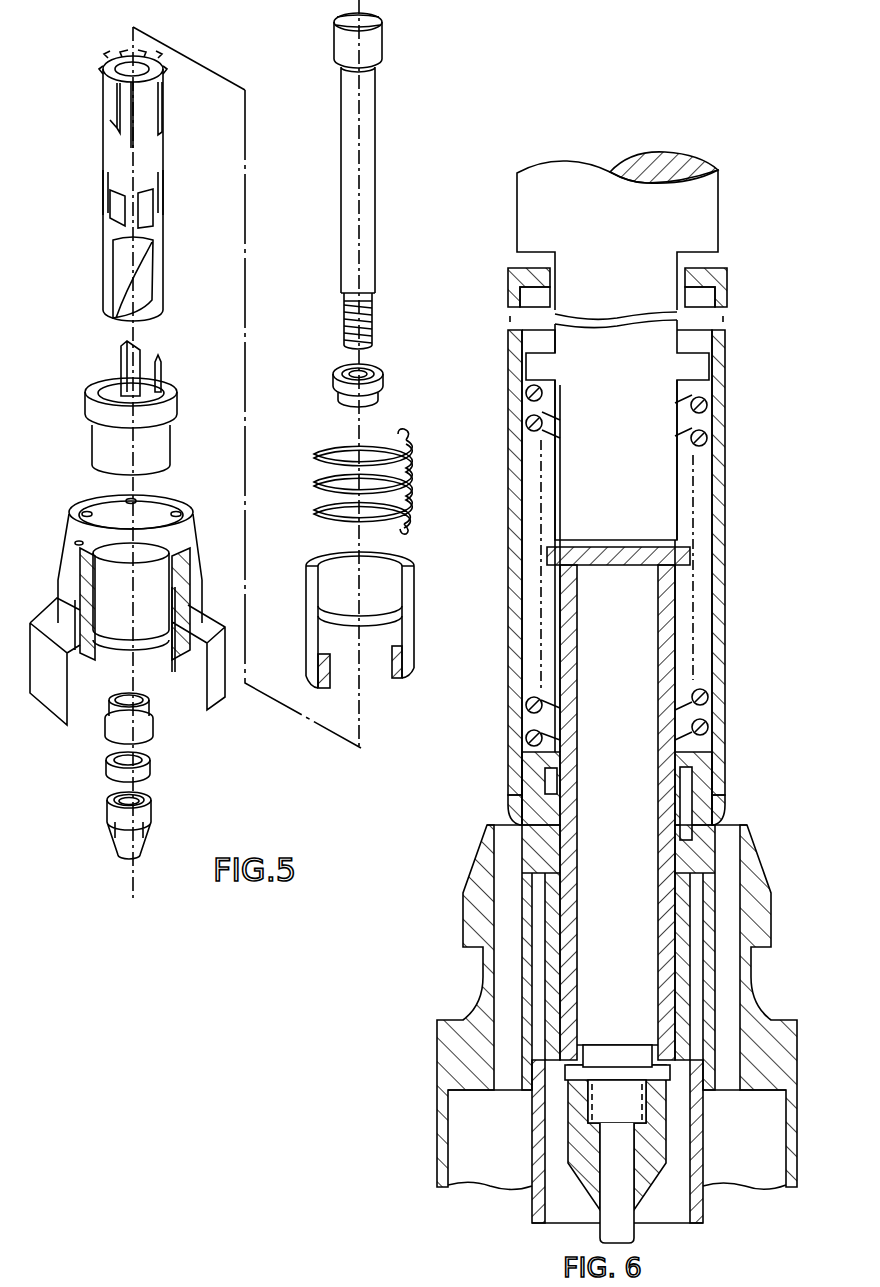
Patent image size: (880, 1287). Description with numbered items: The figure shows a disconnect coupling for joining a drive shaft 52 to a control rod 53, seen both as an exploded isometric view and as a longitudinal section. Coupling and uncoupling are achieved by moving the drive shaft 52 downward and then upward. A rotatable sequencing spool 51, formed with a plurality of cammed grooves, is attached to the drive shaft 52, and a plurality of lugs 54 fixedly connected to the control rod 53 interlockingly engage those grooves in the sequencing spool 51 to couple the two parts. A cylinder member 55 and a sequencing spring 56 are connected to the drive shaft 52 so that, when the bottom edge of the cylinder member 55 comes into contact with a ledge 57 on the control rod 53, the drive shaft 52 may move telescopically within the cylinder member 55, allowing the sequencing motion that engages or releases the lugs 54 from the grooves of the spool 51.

In FIG. 5, the rotatable sequencing spool 51 is at (115, 152).
In FIG. 6, the rotatable sequencing spool 51 is at (568, 812).
In FIG. 5, the drive shaft 52 is at (383, 40).
In FIG. 6, the drive shaft 52 is at (645, 733).
In FIG. 5, the control rod 53 is at (62, 566).
In FIG. 6, the control rod 53 is at (757, 993).
In FIG. 5, the lugs 54 is at (160, 370).
In FIG. 6, the lugs 54 is at (553, 789).
In FIG. 5, the cylinder member 55 is at (412, 648).
In FIG. 6, the cylinder member 55 is at (722, 786).
In FIG. 5, the sequencing spring 56 is at (396, 448).
In FIG. 6, the sequencing spring 56 is at (708, 404).
In FIG. 5, the ledge 57 is at (96, 384).
In FIG. 6, the ledge 57 is at (712, 815).